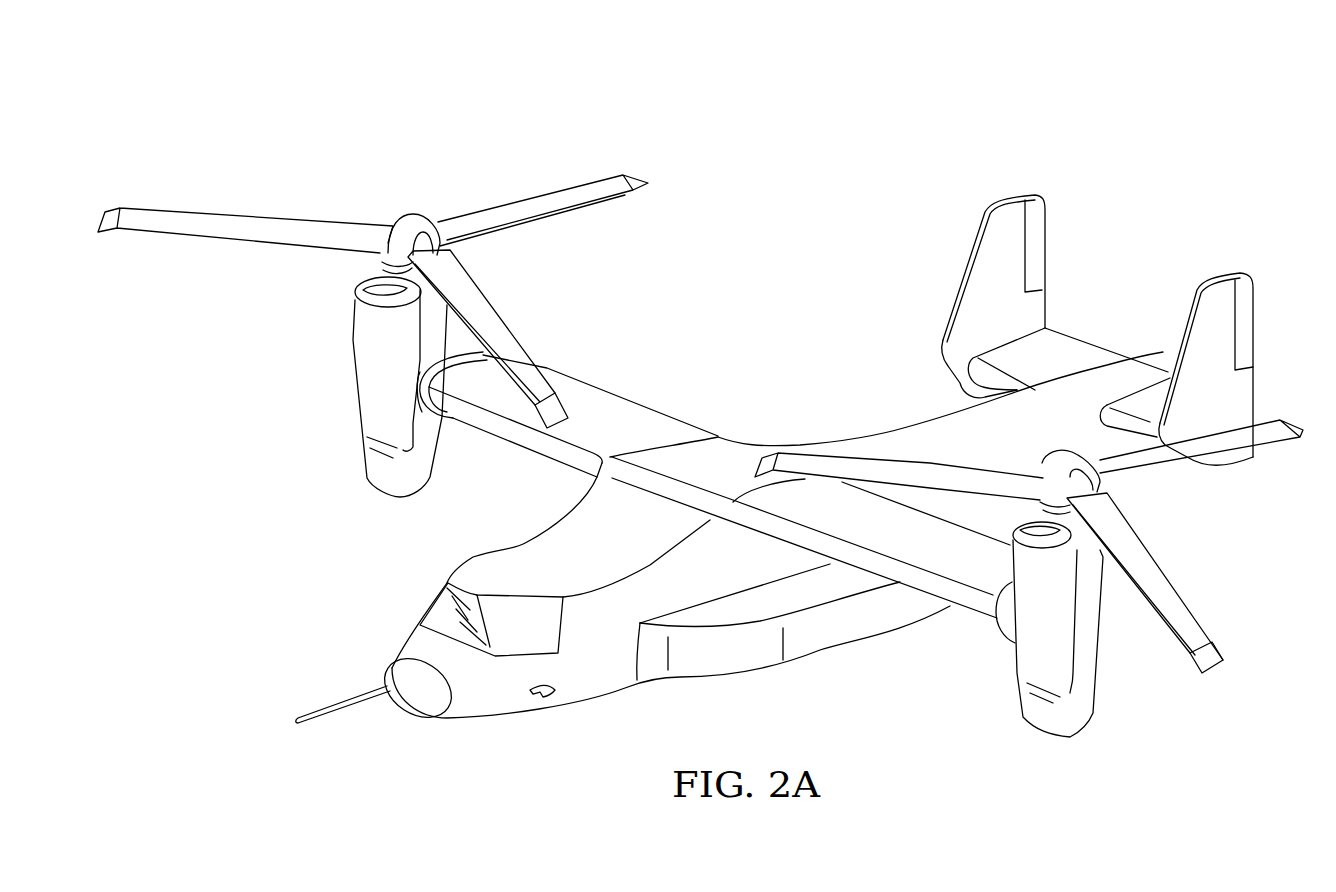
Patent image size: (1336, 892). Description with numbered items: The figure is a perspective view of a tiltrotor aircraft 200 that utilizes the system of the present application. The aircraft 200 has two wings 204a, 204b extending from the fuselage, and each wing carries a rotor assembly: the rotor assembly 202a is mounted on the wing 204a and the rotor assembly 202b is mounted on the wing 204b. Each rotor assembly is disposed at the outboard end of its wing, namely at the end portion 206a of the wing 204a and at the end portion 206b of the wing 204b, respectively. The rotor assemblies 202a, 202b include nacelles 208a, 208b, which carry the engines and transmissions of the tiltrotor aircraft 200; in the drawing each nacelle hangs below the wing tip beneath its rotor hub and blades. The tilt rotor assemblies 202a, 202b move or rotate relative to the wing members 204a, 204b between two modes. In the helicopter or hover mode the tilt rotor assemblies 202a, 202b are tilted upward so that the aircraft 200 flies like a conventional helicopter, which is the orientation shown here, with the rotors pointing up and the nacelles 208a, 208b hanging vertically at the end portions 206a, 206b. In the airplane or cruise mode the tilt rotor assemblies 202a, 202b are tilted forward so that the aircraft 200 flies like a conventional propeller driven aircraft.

The tiltrotor aircraft 200 is at (974, 133).
The rotor assembly 202a is at (347, 276).
The rotor assembly 202b is at (1157, 520).
The wing 204a is at (620, 410).
The wing 204b is at (807, 552).
The end portion 206a is at (395, 388).
The end portion 206b is at (996, 630).
The nacelle 208a is at (360, 420).
The nacelle 208b is at (1097, 680).